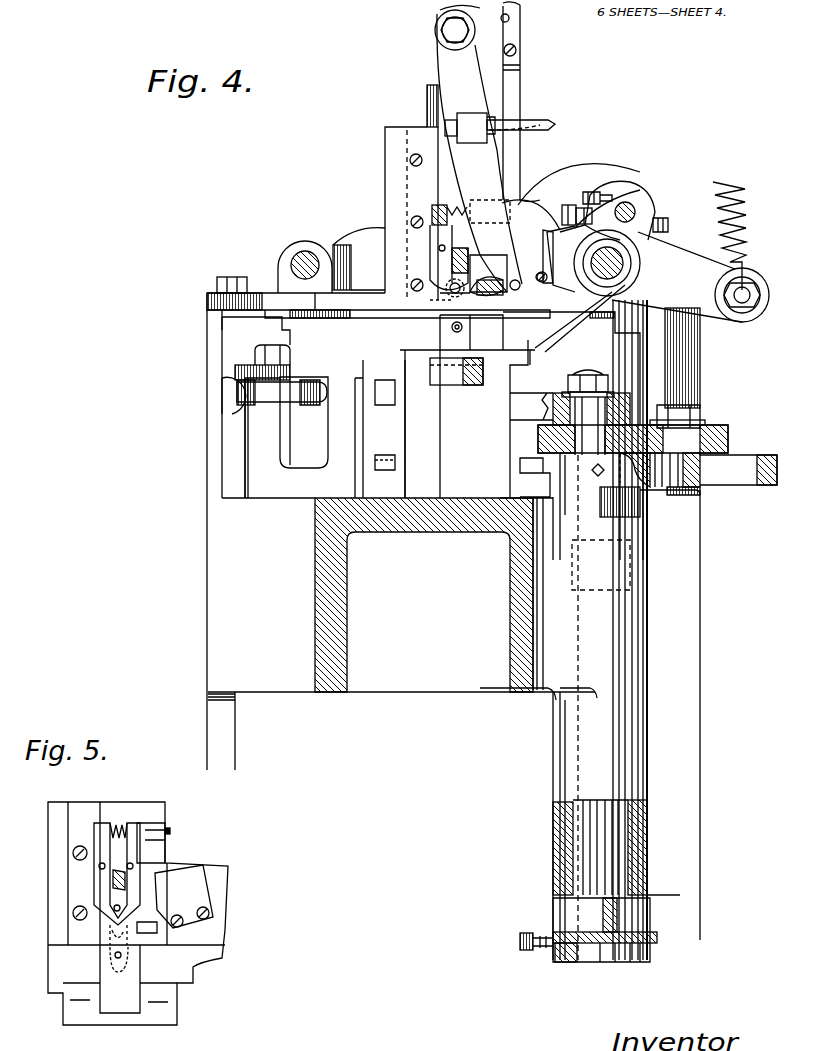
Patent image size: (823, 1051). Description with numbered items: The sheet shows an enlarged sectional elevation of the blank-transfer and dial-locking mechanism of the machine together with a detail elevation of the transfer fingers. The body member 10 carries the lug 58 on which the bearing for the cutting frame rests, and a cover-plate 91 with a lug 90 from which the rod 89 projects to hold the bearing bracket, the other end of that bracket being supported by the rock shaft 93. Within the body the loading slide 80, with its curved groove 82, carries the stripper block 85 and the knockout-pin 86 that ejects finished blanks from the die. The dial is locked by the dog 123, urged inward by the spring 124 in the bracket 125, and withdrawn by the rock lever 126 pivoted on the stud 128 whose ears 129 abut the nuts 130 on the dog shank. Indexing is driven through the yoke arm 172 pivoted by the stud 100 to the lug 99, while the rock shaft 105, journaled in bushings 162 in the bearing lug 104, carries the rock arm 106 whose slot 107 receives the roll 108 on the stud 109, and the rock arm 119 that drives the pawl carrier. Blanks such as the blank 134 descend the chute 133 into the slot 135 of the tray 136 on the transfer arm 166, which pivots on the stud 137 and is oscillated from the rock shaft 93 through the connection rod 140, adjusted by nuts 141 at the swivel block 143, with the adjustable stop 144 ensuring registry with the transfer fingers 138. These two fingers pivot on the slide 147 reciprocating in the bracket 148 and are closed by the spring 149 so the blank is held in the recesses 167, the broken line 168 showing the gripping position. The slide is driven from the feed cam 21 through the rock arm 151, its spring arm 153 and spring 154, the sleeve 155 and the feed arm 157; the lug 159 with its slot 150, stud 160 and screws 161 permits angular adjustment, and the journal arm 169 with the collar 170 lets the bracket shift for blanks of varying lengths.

In FIG. 4, the body member 10 is at (316, 658).
In FIG. 4, the feed cam 21 is at (348, 245).
In FIG. 4, the lug 58 is at (340, 686).
In FIG. 4, the loading slide 80 is at (477, 385).
In FIG. 4, the curved groove 82 is at (480, 392).
In FIG. 4, the stripper block 85 is at (455, 346).
In FIG. 4, the knockout-pin 86 is at (463, 328).
In FIG. 4, the rod 89 is at (291, 262).
In FIG. 4, the lug 90 is at (287, 250).
In FIG. 4, the cover-plate 91 is at (207, 300).
In FIG. 4, the rock shaft 93 is at (668, 306).
In FIG. 4, the lug 99 is at (728, 440).
In FIG. 4, the stud 100 is at (580, 375).
In FIG. 4, the bearing lug 104 is at (553, 788).
In FIG. 4, the rock shaft 105 is at (565, 835).
In FIG. 4, the rock arm 106 is at (775, 485).
In FIG. 4, the slot 107 is at (728, 488).
In FIG. 4, the roll 108 is at (728, 456).
In FIG. 4, the stud 109 is at (725, 423).
In FIG. 4, the rock arm 119 is at (558, 960).
In FIG. 4, the dog 123 is at (305, 447).
In FIG. 4, the spring 124 is at (285, 398).
In FIG. 4, the bracket 125 is at (290, 482).
In FIG. 4, the rock lever 126 is at (233, 370).
In FIG. 4, the stud 128 is at (258, 350).
In FIG. 4, the ears 129 is at (222, 380).
In FIG. 4, the nuts 130 is at (228, 385).
In FIG. 4, the chute 133 is at (508, 92).
In FIG. 4, the blank 134 is at (505, 270).
In FIG. 4, the slot 135 is at (545, 335).
In FIG. 5, the slot 135 is at (152, 915).
In FIG. 4, the tray 136 is at (520, 302).
In FIG. 5, the tray 136 is at (170, 942).
In FIG. 4, the stud 137 is at (452, 32).
In FIG. 4, the transfer fingers 138 is at (455, 295).
In FIG. 5, the transfer fingers 138 is at (140, 830).
In FIG. 4, the connection rod 140 is at (560, 128).
In FIG. 4, the nuts 141 is at (445, 142).
In FIG. 4, the swivel block 143 is at (500, 116).
In FIG. 4, the adjustable stop 144 is at (578, 205).
In FIG. 4, the slide 147 is at (427, 108).
In FIG. 5, the slide 147 is at (120, 800).
In FIG. 4, the bracket 148 is at (385, 178).
In FIG. 5, the bracket 148 is at (48, 857).
In FIG. 4, the spring 149 is at (405, 190).
In FIG. 5, the spring 149 is at (113, 828).
In FIG. 4, the slot 150 is at (642, 212).
In FIG. 4, the rock arm 151 is at (628, 207).
In FIG. 4, the spring arm 153 is at (720, 295).
In FIG. 4, the spring 154 is at (746, 236).
In FIG. 4, the sleeve 155 is at (640, 265).
In FIG. 4, the feed arm 157 is at (525, 195).
In FIG. 4, the lug 159 is at (657, 204).
In FIG. 4, the stud 160 is at (635, 208).
In FIG. 4, the screws 161 is at (592, 196).
In FIG. 4, the bushings 162 is at (640, 585).
In FIG. 4, the transfer arm 166 is at (457, 70).
In FIG. 5, the transfer arm 166 is at (195, 878).
In FIG. 4, the recesses 167 is at (445, 300).
In FIG. 5, the recesses 167 is at (110, 908).
In FIG. 5, the broken line 168 is at (110, 938).
In FIG. 4, the journal arm 169 is at (598, 320).
In FIG. 4, the collar 170 is at (628, 276).
In FIG. 4, the yoke arm 172 is at (527, 402).